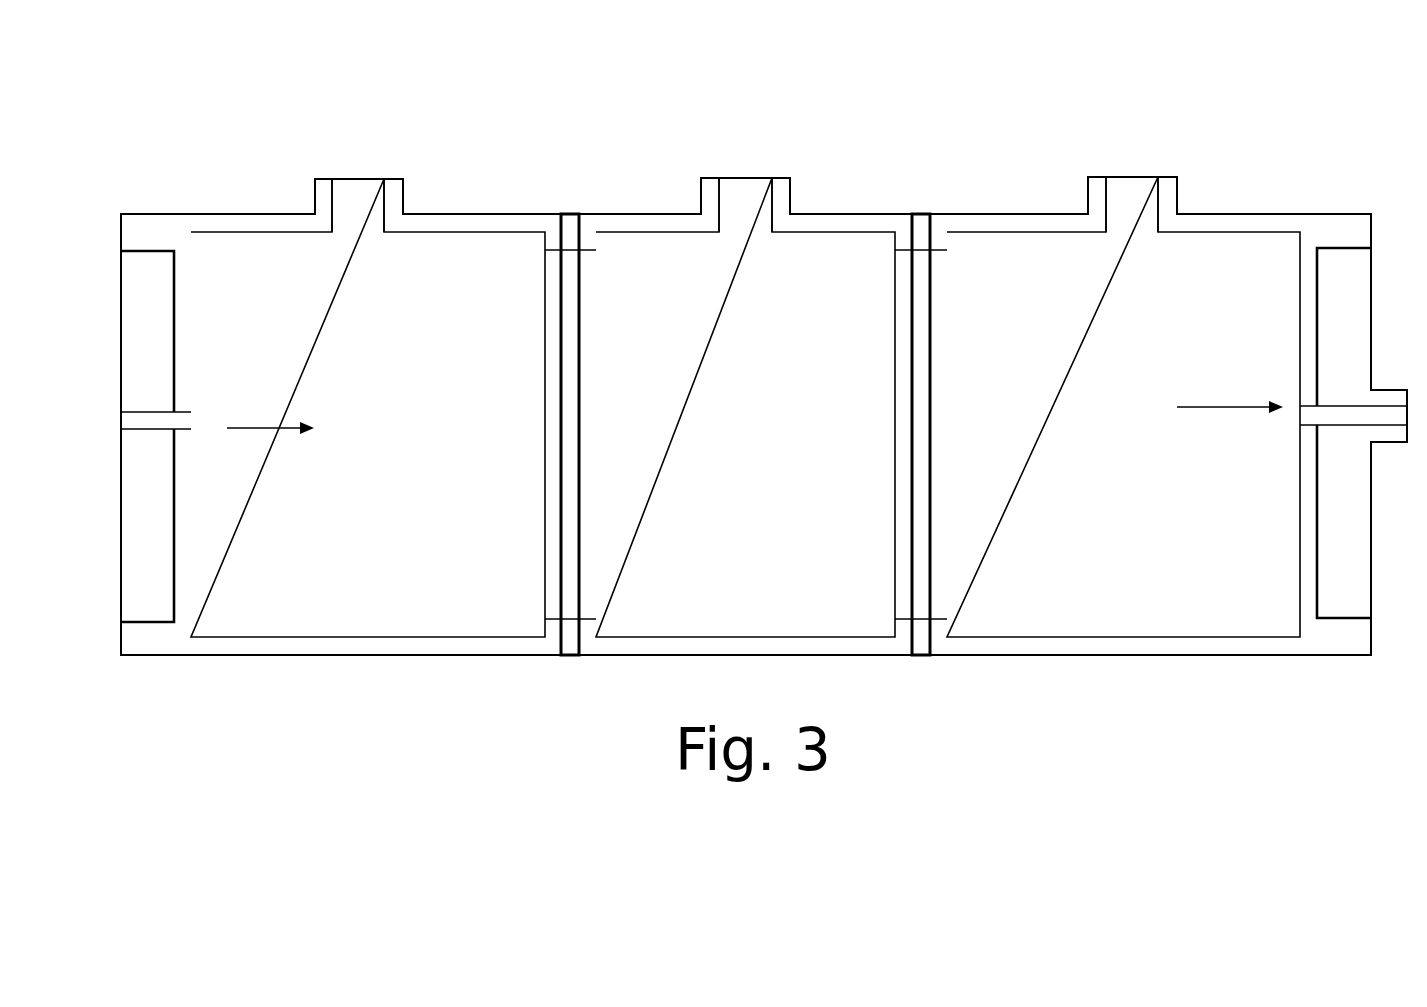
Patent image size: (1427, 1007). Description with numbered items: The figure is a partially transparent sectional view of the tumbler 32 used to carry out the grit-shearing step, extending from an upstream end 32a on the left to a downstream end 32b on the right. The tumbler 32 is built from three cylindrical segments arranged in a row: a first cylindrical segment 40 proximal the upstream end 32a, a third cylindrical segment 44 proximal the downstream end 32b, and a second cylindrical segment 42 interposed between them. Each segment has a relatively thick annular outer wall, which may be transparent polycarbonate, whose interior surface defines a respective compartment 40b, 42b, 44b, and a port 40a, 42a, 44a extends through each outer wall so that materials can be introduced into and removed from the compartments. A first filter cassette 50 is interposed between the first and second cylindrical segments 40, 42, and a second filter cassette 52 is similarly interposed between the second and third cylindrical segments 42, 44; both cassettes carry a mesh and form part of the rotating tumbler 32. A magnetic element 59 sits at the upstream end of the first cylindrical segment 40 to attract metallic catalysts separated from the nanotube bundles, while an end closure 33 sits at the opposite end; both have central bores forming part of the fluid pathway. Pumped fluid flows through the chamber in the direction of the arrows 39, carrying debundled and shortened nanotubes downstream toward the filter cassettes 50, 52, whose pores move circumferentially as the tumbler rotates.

The tumbler 32 is at (243, 146).
The upstream end 32a is at (121, 640).
The downstream end 32b is at (1371, 583).
The end closure 33 is at (1343, 277).
The magnetic element 59 is at (145, 278).
The arrows 39 is at (283, 428).
The first cylindrical segment 40 is at (368, 352).
The port 40a is at (368, 197).
The compartment 40b is at (364, 336).
The second cylindrical segment 42 is at (745, 361).
The port 42a is at (739, 197).
The compartment 42b is at (768, 352).
The third cylindrical segment 44 is at (1123, 360).
The port 44a is at (1126, 195).
The compartment 44b is at (1120, 352).
The first filter cassette 50 is at (565, 213).
The second filter cassette 52 is at (916, 232).